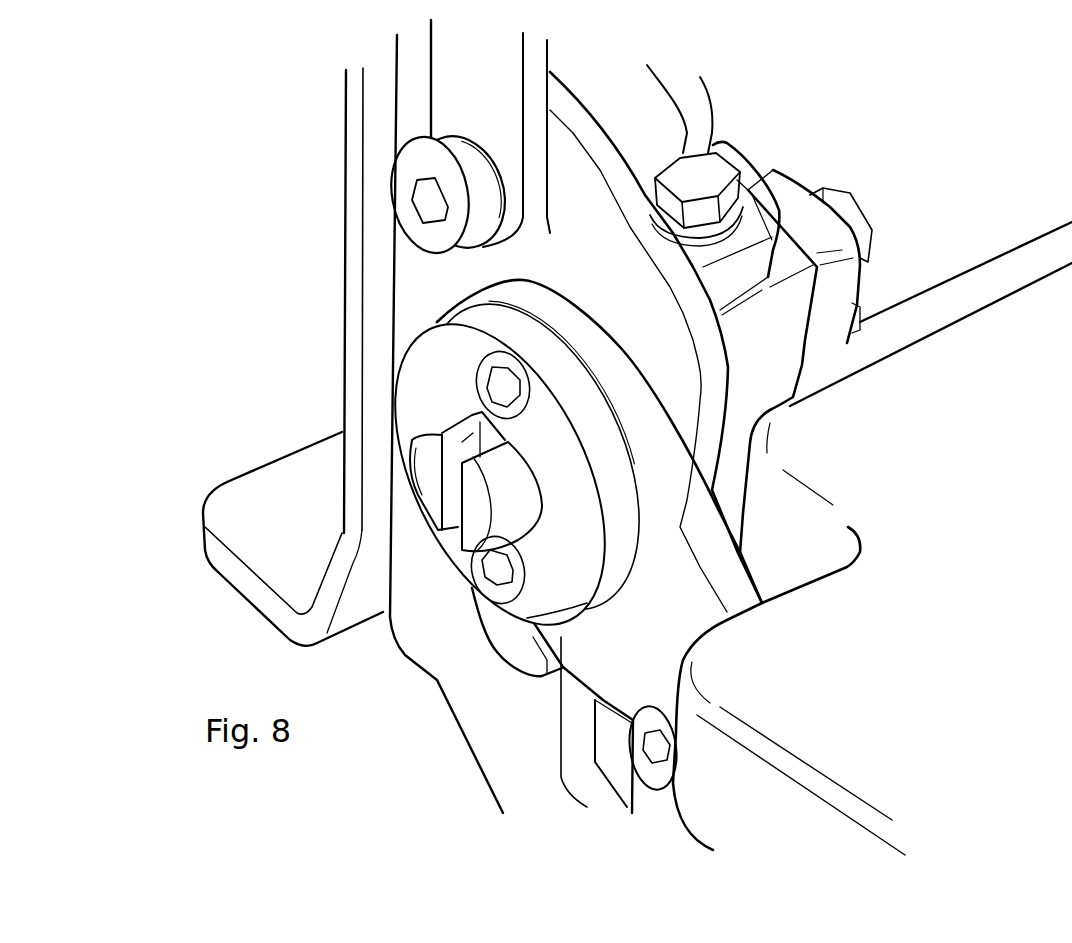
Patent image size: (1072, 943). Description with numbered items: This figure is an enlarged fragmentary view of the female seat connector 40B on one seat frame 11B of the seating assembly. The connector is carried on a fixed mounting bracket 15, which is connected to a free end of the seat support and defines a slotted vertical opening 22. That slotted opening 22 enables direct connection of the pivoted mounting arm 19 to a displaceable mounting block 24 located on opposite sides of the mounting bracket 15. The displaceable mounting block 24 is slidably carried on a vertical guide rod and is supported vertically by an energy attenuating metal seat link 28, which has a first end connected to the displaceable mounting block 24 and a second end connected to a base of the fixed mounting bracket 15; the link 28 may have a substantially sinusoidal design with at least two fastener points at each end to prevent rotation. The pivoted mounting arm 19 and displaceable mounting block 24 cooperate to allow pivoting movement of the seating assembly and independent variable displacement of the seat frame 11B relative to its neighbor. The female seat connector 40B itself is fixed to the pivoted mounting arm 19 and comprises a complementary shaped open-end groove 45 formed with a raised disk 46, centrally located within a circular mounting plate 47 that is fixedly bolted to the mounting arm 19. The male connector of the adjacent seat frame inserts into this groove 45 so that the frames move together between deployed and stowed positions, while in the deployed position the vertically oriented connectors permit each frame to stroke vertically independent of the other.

The seat frame 11B is at (765, 131).
The fixed mounting bracket 15 is at (580, 210).
The pivoted mounting arm 19 is at (743, 590).
The slotted vertical opening 22 is at (580, 738).
The displaceable mounting block 24 is at (763, 370).
The energy attenuating (EA) metal seat link 28 is at (788, 198).
The female seat connector 40B is at (431, 418).
The open-end groove 45 is at (470, 410).
The raised disk 46 is at (510, 480).
The circular mounting plate 47 is at (562, 578).